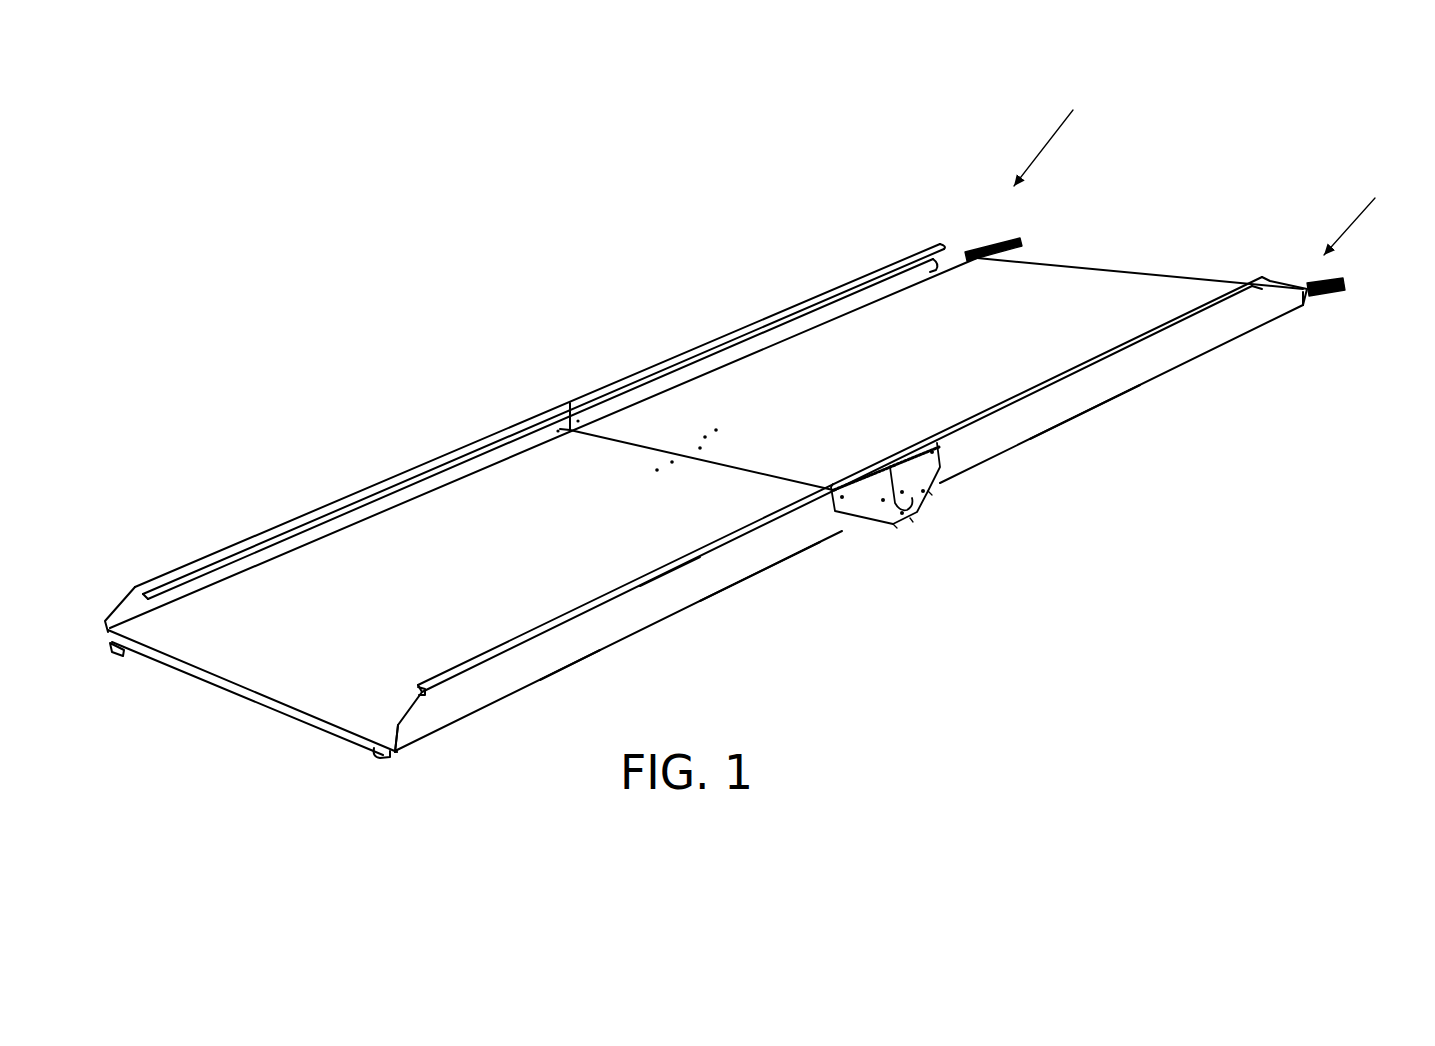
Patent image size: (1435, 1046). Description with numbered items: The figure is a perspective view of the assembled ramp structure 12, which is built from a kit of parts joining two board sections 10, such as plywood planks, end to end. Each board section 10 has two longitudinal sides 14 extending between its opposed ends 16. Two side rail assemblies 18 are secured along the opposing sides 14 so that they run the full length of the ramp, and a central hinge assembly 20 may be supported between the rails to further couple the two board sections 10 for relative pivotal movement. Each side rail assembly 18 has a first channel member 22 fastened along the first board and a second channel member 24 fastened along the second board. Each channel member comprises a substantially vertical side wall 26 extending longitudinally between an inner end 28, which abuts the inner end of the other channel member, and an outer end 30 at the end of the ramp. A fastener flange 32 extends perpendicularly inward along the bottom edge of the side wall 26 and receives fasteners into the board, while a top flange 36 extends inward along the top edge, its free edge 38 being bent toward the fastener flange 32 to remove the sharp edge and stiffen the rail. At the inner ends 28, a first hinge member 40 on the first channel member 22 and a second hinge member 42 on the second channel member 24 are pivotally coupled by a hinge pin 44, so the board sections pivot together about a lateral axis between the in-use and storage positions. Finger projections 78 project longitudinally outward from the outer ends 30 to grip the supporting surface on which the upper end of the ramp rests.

The board section 10 is at (854, 388).
The assembled ramp structure 12 is at (419, 160).
The longitudinal side 14 is at (765, 346).
The opposed end 16 is at (1107, 270).
The side rail assembly 18 is at (1221, 164).
The central hinge assembly 20 is at (705, 426).
The first channel member 22 is at (765, 571).
The second channel member 24 is at (1080, 408).
The side wall 26 is at (572, 648).
The inner end 28 is at (876, 560).
The outer end 30 is at (407, 720).
The fastener flange 32 is at (384, 760).
The top flange 36 is at (640, 586).
The free edge 38 is at (418, 692).
The first hinge member 40 is at (890, 527).
The second hinge member 42 is at (928, 493).
The hinge pin 44 is at (910, 520).
The finger projection 78 is at (1013, 240).